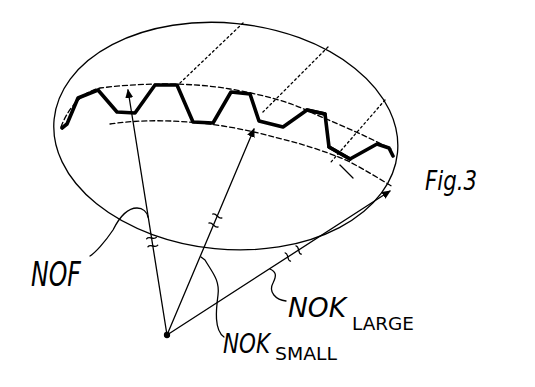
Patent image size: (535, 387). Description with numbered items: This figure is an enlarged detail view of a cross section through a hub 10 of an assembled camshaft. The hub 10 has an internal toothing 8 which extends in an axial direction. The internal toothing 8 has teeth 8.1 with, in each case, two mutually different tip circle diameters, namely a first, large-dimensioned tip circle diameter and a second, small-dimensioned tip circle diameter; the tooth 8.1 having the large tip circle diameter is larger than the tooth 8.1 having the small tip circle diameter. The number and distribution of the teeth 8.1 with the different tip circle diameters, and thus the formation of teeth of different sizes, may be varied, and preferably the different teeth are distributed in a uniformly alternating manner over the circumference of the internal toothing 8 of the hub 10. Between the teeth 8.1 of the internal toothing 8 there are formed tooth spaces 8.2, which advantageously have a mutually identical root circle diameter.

The hub 10 is at (340, 80).
The internal toothing 8 is at (110, 122).
The teeth 8.1 is at (313, 113).
The tooth spaces 8.2 is at (331, 152).